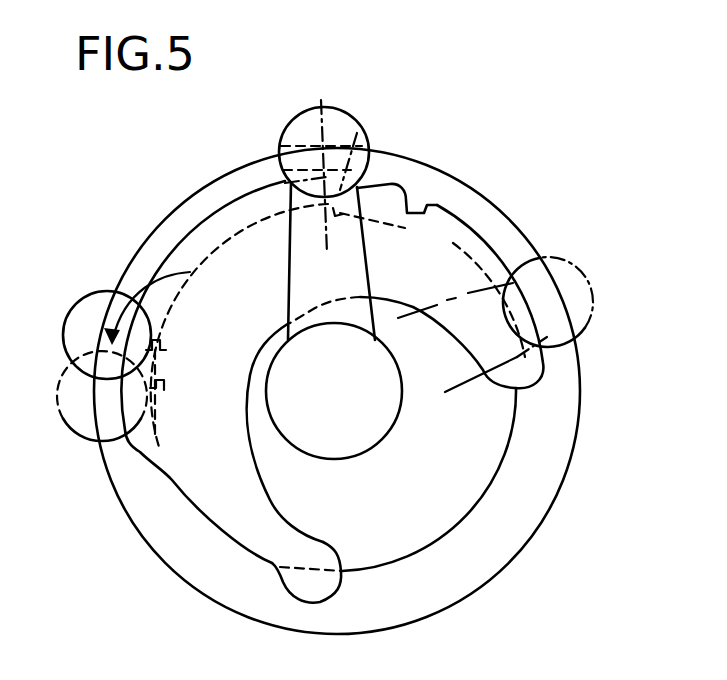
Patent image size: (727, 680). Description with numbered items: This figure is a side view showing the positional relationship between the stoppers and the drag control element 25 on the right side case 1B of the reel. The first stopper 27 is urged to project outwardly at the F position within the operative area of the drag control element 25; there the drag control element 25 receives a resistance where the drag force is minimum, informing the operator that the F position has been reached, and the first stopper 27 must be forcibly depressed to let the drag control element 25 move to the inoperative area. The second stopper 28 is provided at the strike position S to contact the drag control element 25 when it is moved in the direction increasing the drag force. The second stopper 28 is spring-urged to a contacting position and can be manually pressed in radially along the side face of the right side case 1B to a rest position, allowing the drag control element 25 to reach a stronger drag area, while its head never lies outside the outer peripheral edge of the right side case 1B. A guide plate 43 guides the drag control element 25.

The right side case 1B is at (500, 570).
The drag control element 25 is at (360, 137).
The second stopper 28 is at (397, 188).
The guide plate 43 is at (327, 543).
The first stopper 27 is at (170, 313).
The strike position S is at (321, 158).
The F position F is at (190, 272).